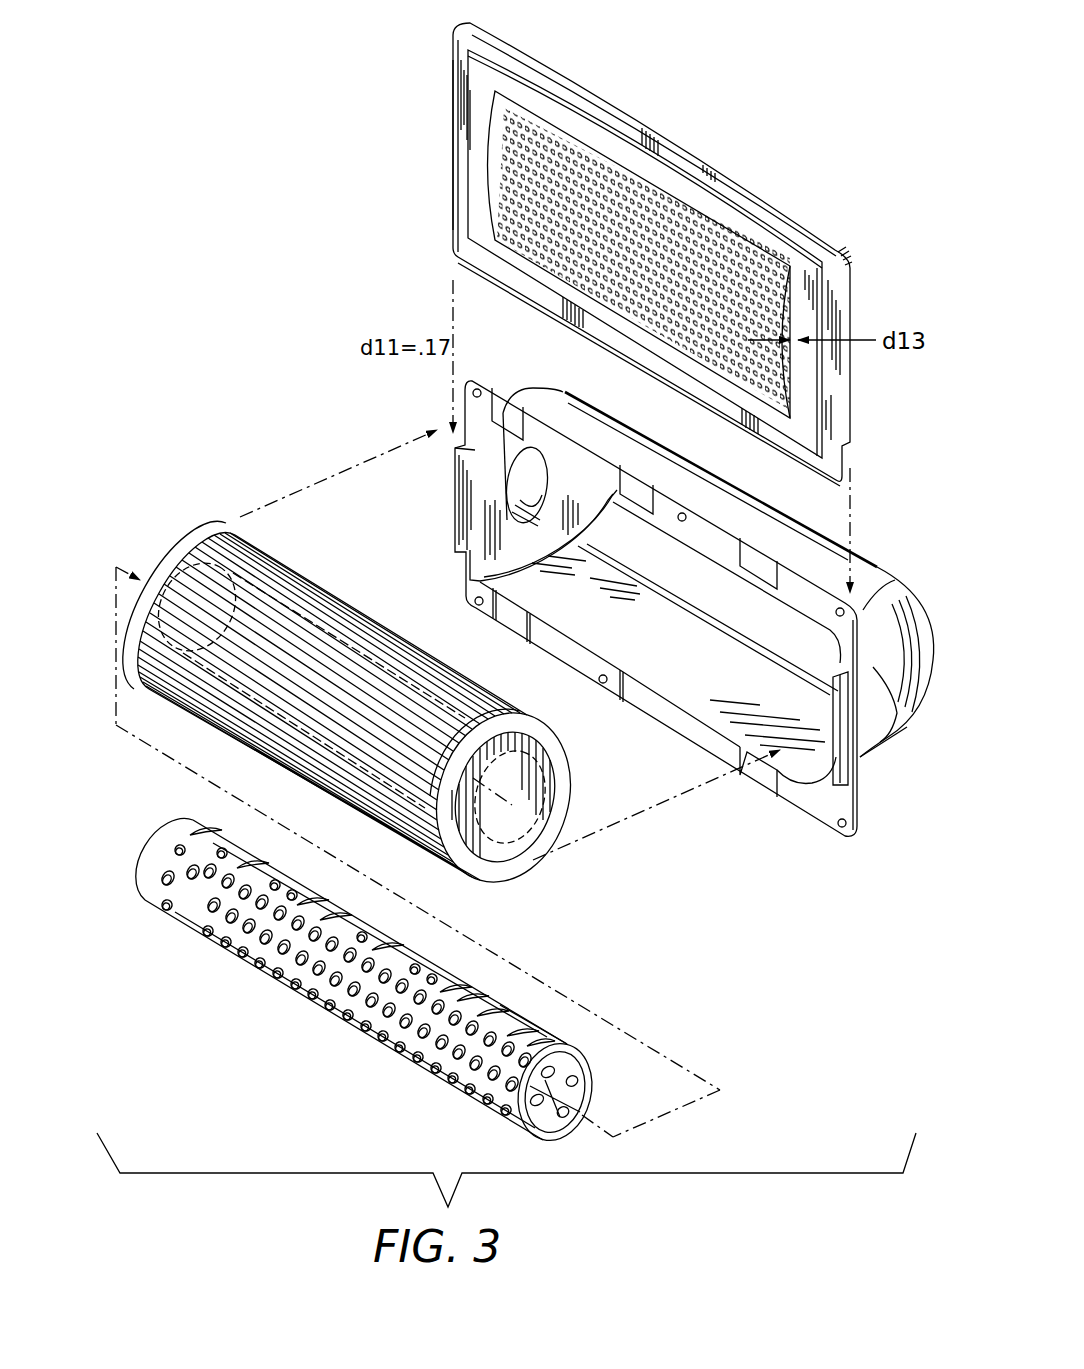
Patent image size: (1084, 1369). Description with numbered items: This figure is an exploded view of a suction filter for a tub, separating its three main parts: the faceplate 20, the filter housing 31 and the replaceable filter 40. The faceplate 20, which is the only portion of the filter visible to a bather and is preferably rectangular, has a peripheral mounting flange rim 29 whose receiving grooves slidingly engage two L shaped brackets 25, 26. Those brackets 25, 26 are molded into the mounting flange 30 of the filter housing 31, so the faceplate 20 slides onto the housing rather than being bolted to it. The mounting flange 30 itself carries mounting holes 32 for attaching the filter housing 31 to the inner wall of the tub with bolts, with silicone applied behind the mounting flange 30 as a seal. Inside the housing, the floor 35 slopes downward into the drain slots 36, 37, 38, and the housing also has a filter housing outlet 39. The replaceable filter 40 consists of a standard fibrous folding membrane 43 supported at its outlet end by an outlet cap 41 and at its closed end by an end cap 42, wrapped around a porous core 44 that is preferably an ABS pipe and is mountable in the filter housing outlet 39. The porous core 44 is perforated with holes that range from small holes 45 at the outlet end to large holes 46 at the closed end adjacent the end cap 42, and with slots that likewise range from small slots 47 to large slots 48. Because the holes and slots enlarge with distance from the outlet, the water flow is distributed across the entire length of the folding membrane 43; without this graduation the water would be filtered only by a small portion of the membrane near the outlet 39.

The faceplate 20 is at (756, 184).
The peripheral mounting flange rim 29 is at (453, 142).
The L shaped bracket 25 is at (465, 462).
The L shaped bracket 26 is at (860, 755).
The mounting flange 30 is at (838, 630).
The filter housing 31 is at (838, 742).
The mounting holes 32 is at (477, 389).
The floor 35 is at (687, 660).
The drain slot 36 is at (508, 605).
The drain slot 37 is at (640, 677).
The drain slot 38 is at (763, 775).
The filter housing outlet 39 is at (540, 476).
The replaceable filter 40 is at (187, 526).
The outlet cap 41 is at (165, 565).
The end cap 42 is at (482, 855).
The folding membrane 43 is at (232, 706).
The porous core 44 is at (150, 873).
The small holes 45 is at (230, 920).
The large holes 46 is at (563, 1027).
The small slots 47 is at (192, 825).
The large slots 48 is at (538, 1020).